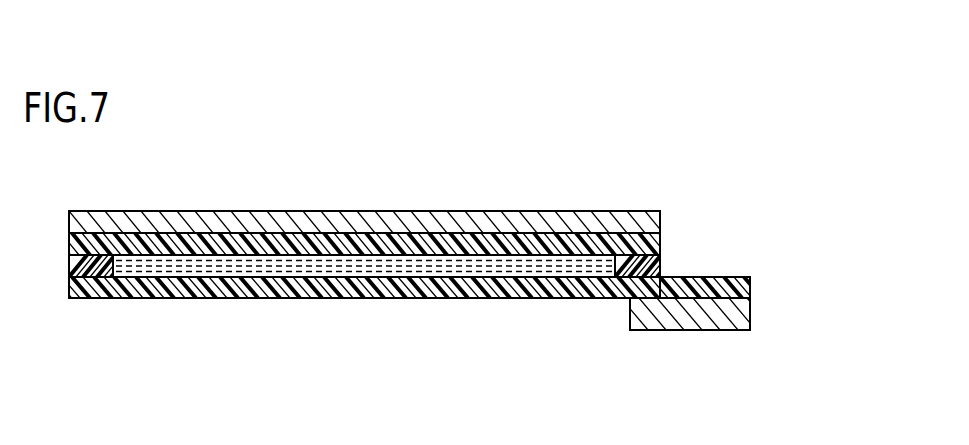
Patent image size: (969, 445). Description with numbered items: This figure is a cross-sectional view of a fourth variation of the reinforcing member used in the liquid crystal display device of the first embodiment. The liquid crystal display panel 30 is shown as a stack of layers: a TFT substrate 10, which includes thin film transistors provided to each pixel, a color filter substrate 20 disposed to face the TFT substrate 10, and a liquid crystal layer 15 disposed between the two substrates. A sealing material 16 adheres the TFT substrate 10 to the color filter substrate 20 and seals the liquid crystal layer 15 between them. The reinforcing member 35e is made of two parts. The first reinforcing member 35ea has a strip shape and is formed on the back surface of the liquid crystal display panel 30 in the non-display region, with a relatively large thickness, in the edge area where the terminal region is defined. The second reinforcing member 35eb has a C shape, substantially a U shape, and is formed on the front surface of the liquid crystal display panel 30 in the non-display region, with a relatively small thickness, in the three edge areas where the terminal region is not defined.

The TFT substrate 10 is at (312, 288).
The liquid crystal layer 15 is at (435, 265).
The sealing material 16 is at (638, 253).
The color filter substrate 20 is at (550, 243).
The liquid crystal display panel 30 is at (66, 234).
The reinforcing member 35e is at (700, 383).
The first reinforcing member 35ea is at (653, 315).
The second reinforcing member 35eb is at (577, 220).